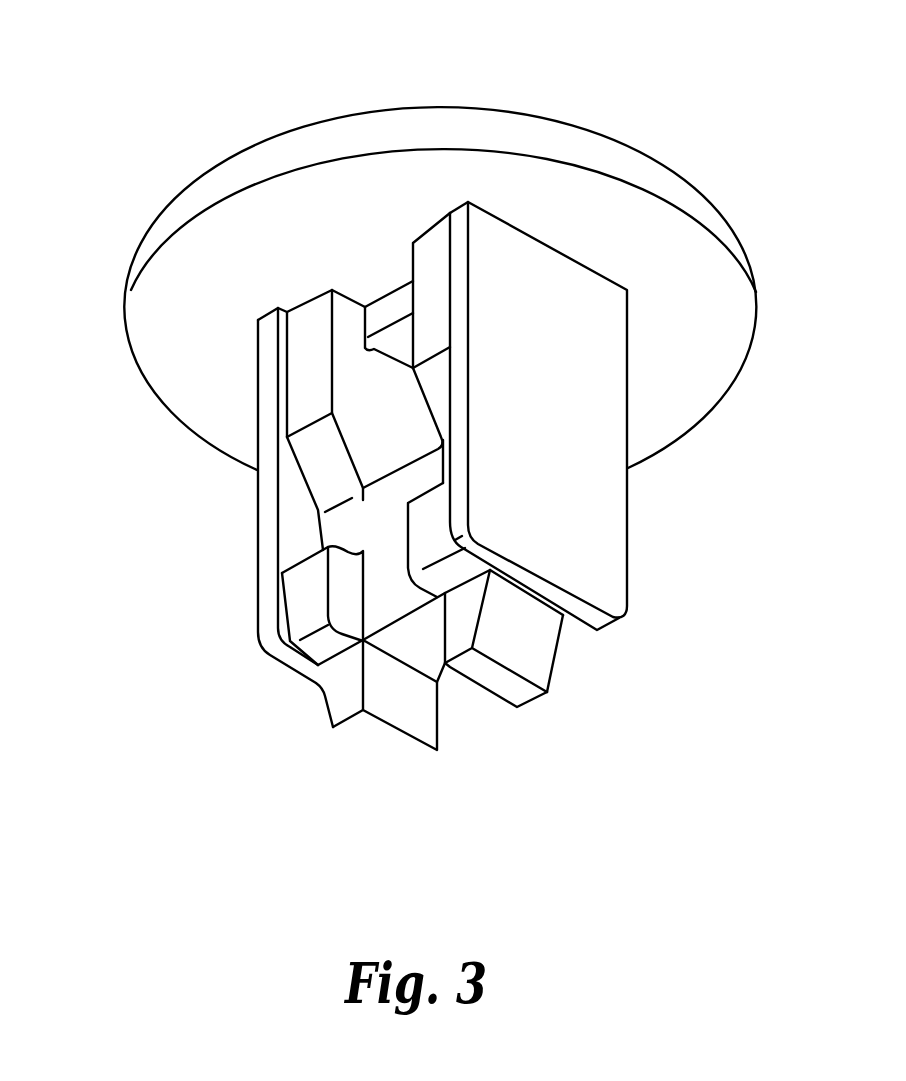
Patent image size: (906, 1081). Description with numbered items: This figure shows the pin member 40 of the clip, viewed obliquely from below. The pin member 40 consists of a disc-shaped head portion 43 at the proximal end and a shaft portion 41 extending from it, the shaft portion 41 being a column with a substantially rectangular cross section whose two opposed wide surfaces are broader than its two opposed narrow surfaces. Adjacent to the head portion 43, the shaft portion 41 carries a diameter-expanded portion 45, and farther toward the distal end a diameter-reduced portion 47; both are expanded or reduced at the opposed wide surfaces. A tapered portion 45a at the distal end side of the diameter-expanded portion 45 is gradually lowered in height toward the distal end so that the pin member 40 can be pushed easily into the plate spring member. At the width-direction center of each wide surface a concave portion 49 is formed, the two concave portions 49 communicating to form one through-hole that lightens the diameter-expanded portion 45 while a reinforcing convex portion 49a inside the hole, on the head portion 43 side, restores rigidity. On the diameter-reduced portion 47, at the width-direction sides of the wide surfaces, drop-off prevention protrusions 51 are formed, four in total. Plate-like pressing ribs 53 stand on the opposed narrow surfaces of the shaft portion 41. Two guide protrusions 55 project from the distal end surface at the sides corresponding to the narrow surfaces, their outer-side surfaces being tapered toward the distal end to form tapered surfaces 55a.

The pin member 40 is at (426, 96).
The shaft portion 41 is at (236, 589).
The head portion 43 is at (276, 158).
The diameter-expanded portion 45 is at (300, 408).
The tapered portion 45a is at (312, 468).
The diameter-reduced portion 47 is at (330, 532).
The concave portion 49 is at (363, 388).
The reinforcing convex portion 49a is at (378, 318).
The drop-off prevention protrusion 51 is at (305, 623).
The pressing rib 53 is at (272, 630).
The guide protrusion 55 is at (391, 746).
The tapered surface 55a is at (327, 712).